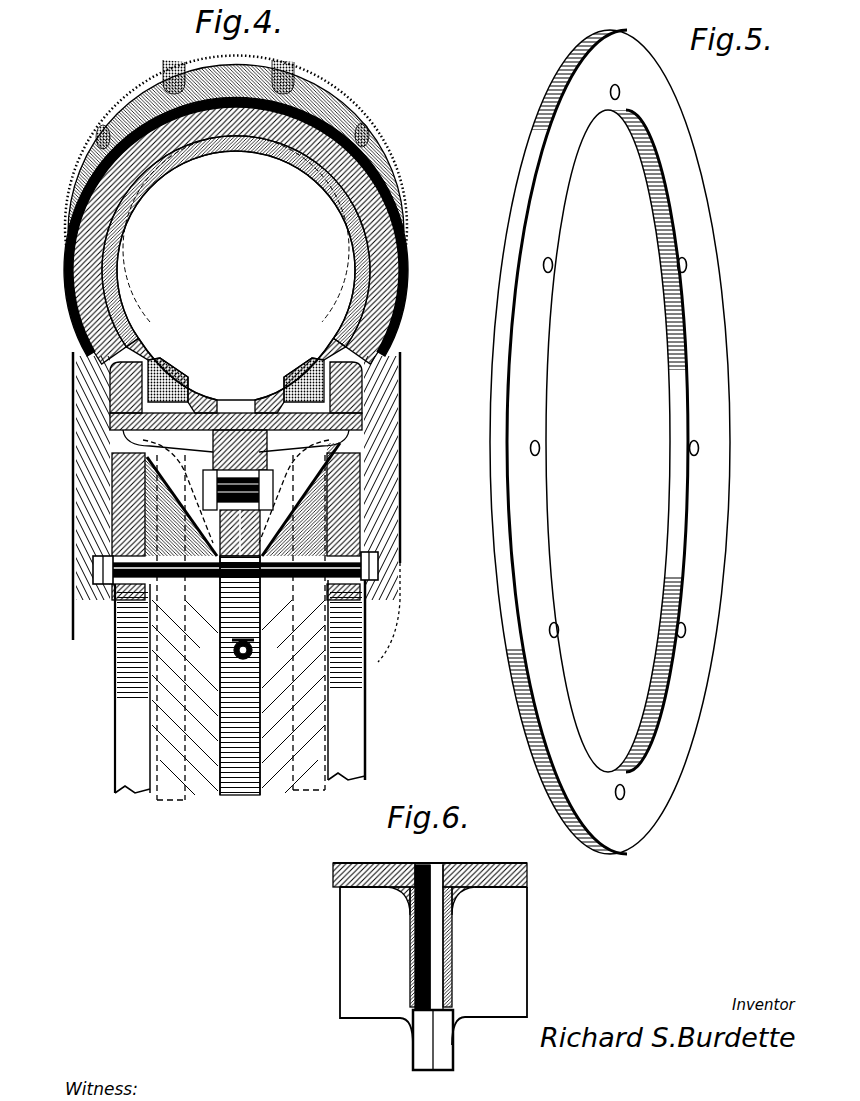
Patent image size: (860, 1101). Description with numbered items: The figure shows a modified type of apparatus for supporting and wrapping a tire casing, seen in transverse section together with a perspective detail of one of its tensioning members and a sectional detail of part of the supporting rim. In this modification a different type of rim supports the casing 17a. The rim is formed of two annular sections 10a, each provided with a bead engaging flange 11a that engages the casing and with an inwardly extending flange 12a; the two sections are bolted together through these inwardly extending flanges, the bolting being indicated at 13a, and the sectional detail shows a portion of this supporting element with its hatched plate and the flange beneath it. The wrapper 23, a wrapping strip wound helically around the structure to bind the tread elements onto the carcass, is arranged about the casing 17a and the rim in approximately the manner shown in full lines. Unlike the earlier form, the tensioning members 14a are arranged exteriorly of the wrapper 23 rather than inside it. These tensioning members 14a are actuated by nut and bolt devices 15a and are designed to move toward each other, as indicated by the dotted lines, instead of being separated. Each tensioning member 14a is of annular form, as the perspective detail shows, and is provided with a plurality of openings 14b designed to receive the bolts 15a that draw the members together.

In FIG. 4, the annular section 10a is at (360, 392).
In FIG. 6, the annular section 10a is at (362, 868).
In FIG. 4, the bead engaging flange 11a is at (103, 365).
In FIG. 4, the inwardly extending flange 12a is at (122, 441).
In FIG. 6, the inwardly extending flange 12a is at (466, 947).
In FIG. 4, the bolt 13a is at (203, 488).
In FIG. 4, the tensioning member 14a is at (125, 713).
In FIG. 4, the opening 14b is at (112, 545).
In FIG. 5, the opening 14b is at (700, 448).
In FIG. 4, the nut and bolt device 15a is at (93, 578).
In FIG. 4, the casing 17a is at (378, 240).
In FIG. 4, the wrapping strip 23 is at (403, 477).